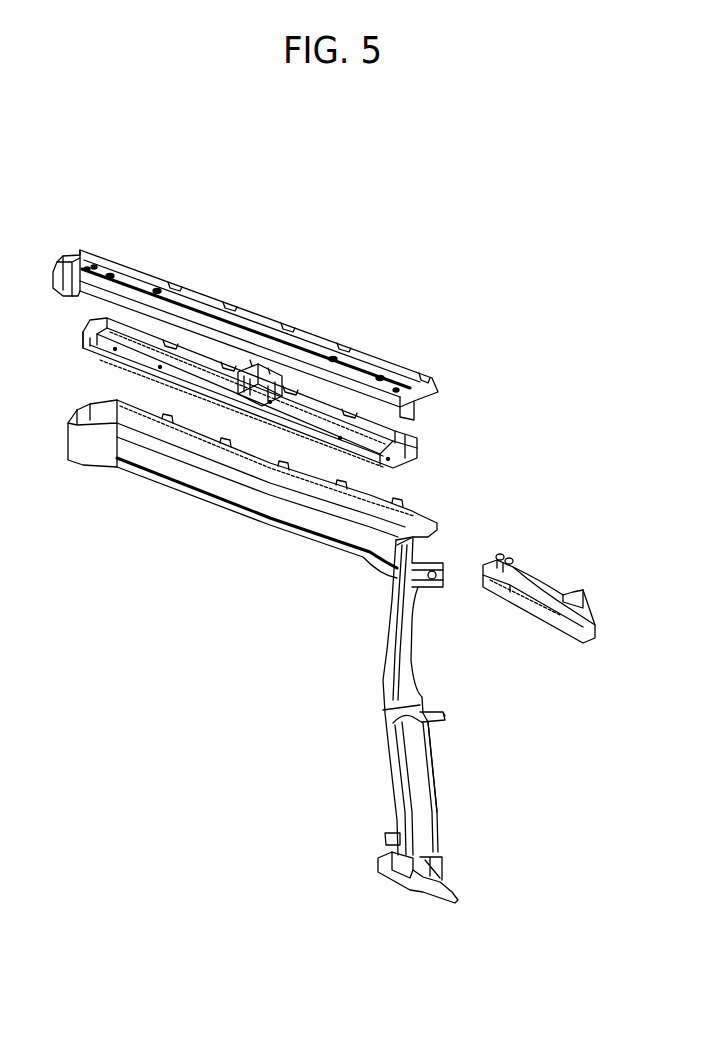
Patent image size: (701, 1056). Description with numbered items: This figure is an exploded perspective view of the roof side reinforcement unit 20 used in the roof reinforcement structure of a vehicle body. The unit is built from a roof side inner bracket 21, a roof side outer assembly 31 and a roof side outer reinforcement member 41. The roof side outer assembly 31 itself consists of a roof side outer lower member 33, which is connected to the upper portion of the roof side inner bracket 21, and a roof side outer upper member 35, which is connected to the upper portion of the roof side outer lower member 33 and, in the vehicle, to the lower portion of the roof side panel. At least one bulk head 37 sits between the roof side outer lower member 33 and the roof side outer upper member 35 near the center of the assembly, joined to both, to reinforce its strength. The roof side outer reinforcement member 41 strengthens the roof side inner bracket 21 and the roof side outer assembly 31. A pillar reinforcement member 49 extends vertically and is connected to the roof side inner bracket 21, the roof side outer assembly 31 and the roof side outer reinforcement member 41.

The roof side reinforcement unit 20 is at (556, 250).
The roof side inner bracket 21 is at (250, 518).
The roof side outer assembly 31 is at (440, 434).
The roof side outer lower member 33 is at (122, 361).
The roof side outer upper member 35 is at (193, 307).
The bulk head 37 is at (260, 376).
The roof side outer reinforcement member 41 is at (567, 580).
The pillar reinforcement member 49 is at (385, 644).